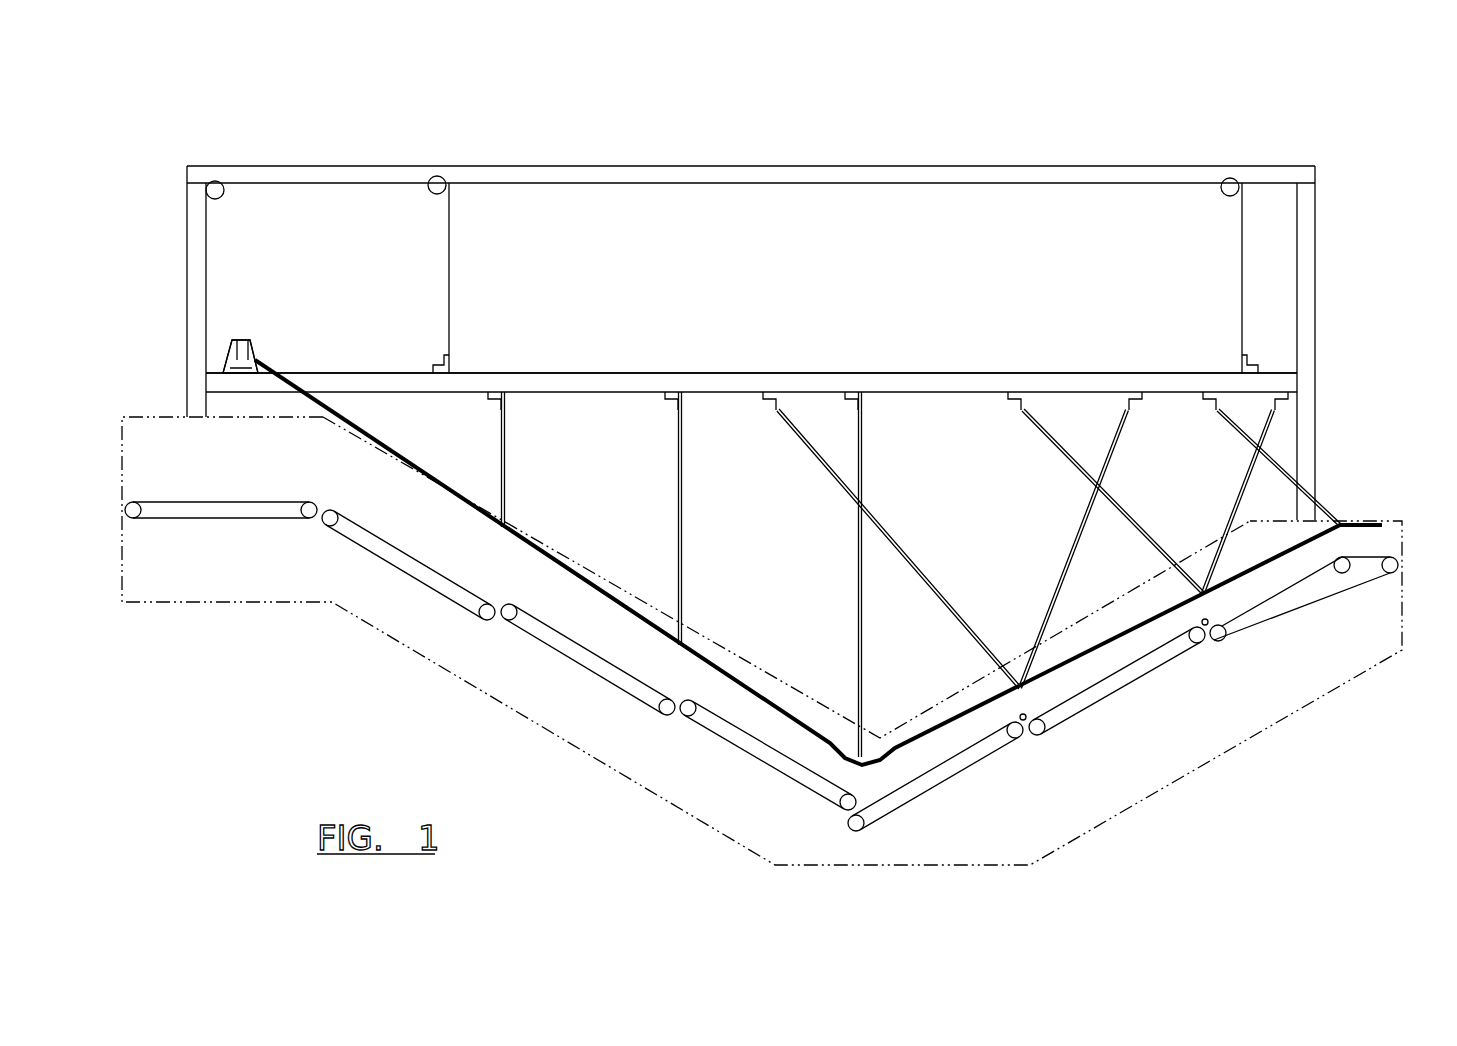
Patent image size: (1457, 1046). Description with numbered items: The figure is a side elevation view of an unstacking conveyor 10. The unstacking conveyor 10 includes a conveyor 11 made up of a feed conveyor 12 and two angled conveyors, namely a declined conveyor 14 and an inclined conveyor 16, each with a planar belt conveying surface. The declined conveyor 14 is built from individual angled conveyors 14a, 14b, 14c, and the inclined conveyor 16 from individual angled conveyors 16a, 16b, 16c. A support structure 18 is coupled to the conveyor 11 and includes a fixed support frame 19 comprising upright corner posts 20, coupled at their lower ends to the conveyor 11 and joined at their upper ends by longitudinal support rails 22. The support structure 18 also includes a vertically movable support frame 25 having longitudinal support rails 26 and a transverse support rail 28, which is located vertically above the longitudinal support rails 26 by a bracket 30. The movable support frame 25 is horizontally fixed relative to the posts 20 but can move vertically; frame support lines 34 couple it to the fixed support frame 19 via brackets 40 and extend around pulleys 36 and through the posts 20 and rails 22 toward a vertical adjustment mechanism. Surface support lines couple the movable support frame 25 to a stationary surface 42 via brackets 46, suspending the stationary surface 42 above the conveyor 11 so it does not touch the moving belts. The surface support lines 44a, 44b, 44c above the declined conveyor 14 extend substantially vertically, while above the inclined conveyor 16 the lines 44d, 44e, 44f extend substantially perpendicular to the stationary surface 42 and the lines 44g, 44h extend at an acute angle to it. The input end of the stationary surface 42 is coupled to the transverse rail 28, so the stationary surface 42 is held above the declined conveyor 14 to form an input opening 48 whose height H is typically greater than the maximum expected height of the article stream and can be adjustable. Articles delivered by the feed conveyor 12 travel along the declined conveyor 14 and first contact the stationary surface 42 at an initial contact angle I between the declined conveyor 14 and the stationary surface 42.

The unstacking conveyor 10 is at (1243, 802).
The conveyor 11 is at (1393, 610).
The feed conveyor 12 is at (211, 518).
The declined conveyor 14 is at (569, 692).
The individual angled conveyor 14a is at (403, 572).
The individual angled conveyor 14b is at (556, 638).
The individual angled conveyor 14c is at (748, 745).
The inclined conveyor 16 is at (1138, 736).
The individual angled conveyor 16a is at (944, 775).
The individual angled conveyor 16b is at (1075, 708).
The individual angled conveyor 16c is at (1292, 608).
The support structure 18 is at (1323, 160).
The fixed support frame 19 is at (961, 162).
The upright corner posts 20 is at (190, 278).
The longitudinal support rails 22 is at (668, 172).
The vertically movable support frame 25 is at (946, 372).
The longitudinal support rails 26 is at (603, 380).
The transverse support rail 28 is at (243, 340).
The bracket 30 is at (232, 364).
The frame support lines 34 is at (452, 272).
The pulleys 36 is at (222, 198).
The brackets 40 is at (444, 369).
The stationary surface 42 is at (560, 590).
The surface support line 44a is at (507, 447).
The surface support line 44b is at (684, 493).
The surface support line 44c is at (864, 660).
The surface support line 44d is at (887, 538).
The surface support line 44e is at (1115, 503).
The surface support line 44f is at (1286, 478).
The surface support line 44g is at (1060, 578).
The surface support line 44h is at (1250, 463).
The brackets 46 is at (494, 399).
The input opening 48 is at (306, 458).
The height of the input opening H is at (346, 511).
The initial contact angle I is at (418, 489).